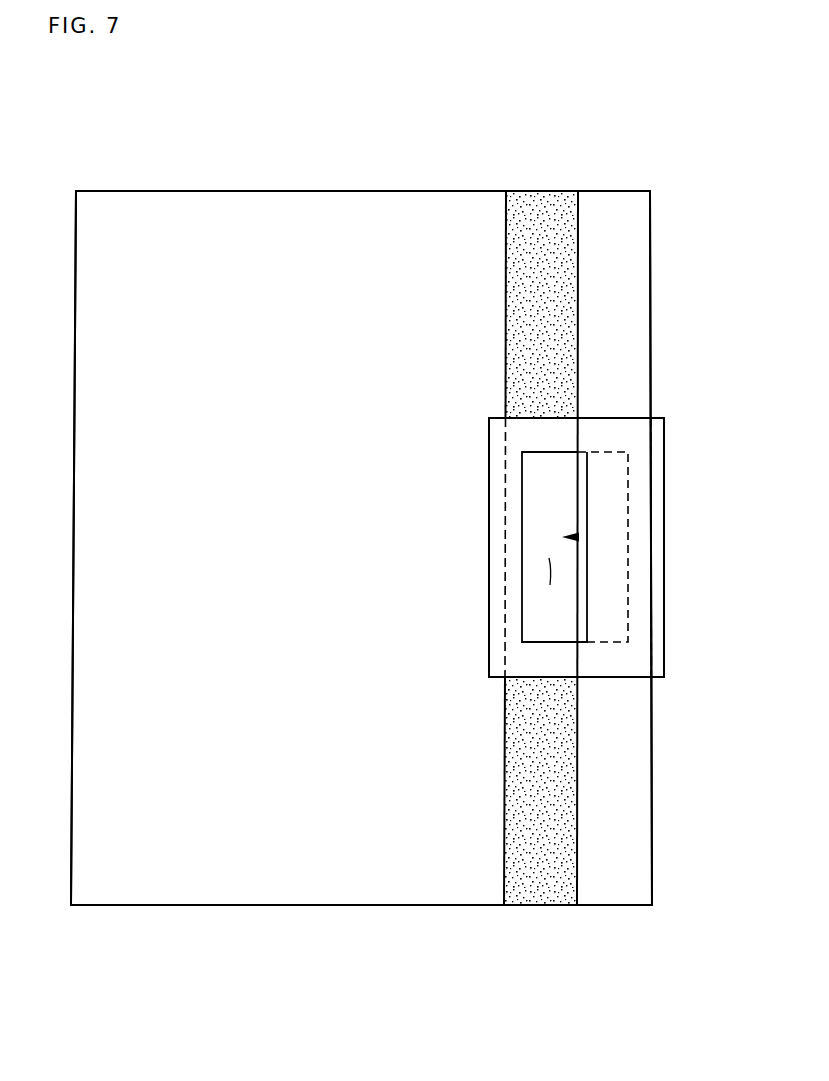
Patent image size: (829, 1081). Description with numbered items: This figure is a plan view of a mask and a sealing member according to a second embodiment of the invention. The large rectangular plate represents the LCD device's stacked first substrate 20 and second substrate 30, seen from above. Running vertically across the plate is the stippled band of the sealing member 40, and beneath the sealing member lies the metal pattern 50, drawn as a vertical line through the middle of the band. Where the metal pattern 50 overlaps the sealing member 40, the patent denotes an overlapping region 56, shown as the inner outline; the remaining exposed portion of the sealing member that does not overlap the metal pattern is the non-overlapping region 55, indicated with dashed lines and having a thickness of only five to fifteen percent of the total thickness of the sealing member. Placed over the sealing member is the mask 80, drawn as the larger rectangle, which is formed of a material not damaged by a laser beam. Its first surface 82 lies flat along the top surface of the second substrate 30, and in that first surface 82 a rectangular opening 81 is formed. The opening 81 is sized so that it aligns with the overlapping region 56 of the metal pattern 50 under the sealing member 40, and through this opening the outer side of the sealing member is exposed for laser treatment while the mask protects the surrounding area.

The first substrate 20 is at (298, 205).
The second substrate 30 is at (361, 548).
The sealing member 40 is at (540, 205).
The metal pattern 50 is at (579, 537).
The non-overlapping region 55 is at (628, 618).
The overlapping region 56 is at (550, 488).
The mask 80 is at (688, 448).
The opening 81 is at (550, 572).
The first surface 82 is at (618, 663).